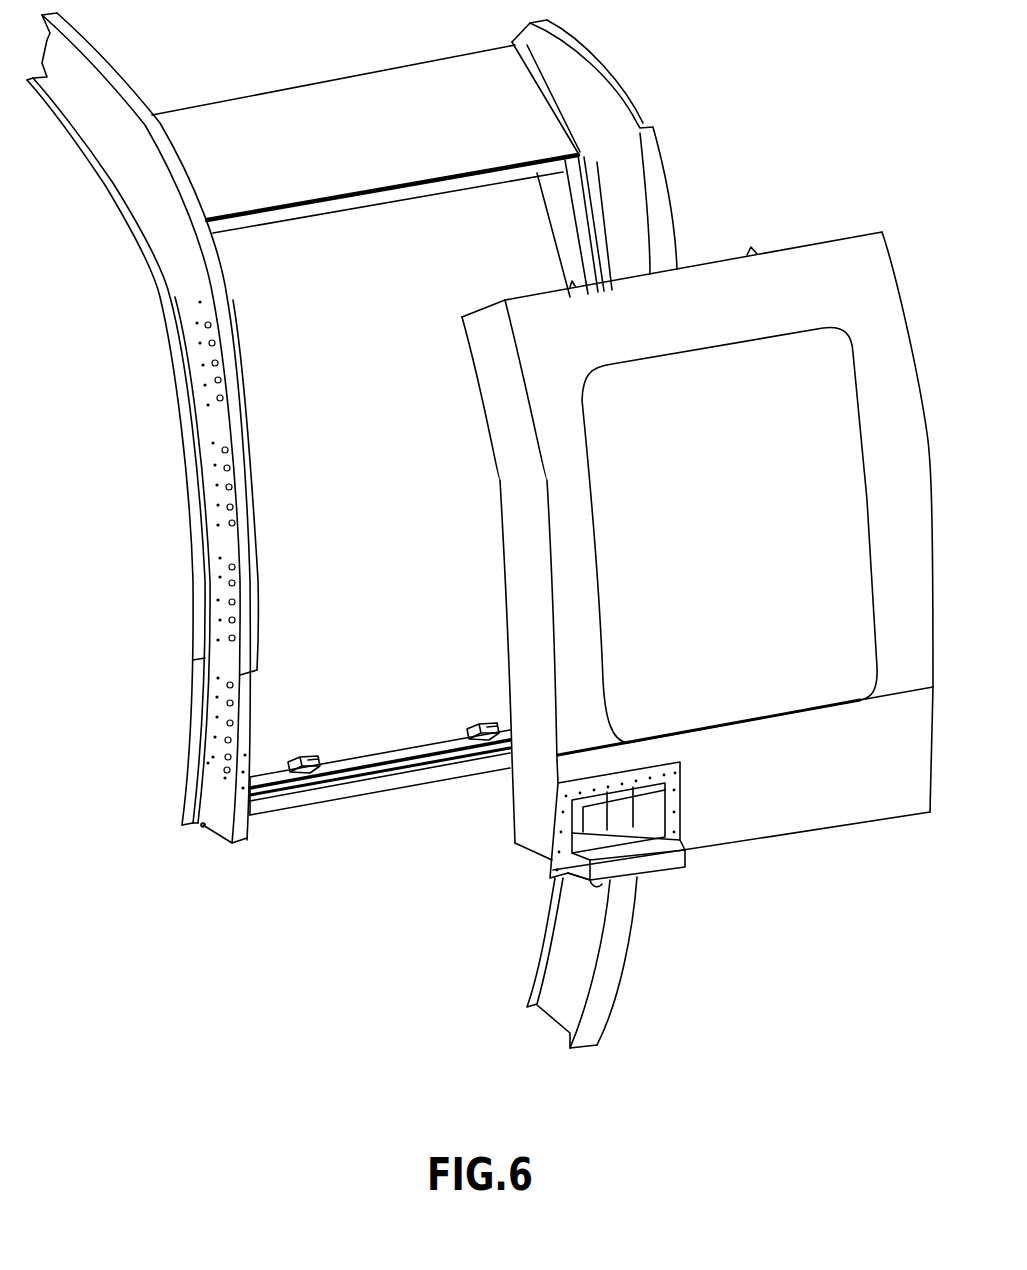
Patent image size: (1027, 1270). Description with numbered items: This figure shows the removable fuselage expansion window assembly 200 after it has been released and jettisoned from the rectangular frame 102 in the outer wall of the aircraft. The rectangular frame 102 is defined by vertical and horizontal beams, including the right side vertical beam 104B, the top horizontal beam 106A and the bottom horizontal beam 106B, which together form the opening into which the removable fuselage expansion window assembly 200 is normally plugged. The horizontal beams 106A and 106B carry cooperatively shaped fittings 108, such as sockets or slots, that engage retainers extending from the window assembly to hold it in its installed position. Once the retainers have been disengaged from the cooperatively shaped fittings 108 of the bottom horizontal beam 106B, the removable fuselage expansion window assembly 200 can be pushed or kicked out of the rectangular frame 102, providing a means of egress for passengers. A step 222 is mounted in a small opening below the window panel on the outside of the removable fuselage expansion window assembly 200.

The rectangular frame 102 is at (457, 170).
The right side vertical beam 104B is at (212, 425).
The top horizontal beam 106A is at (340, 212).
The bottom horizontal beam 106B is at (395, 747).
The cooperatively shaped fittings 108 is at (312, 758).
The removable fuselage expansion window assembly 200 is at (778, 840).
The step 222 is at (657, 862).